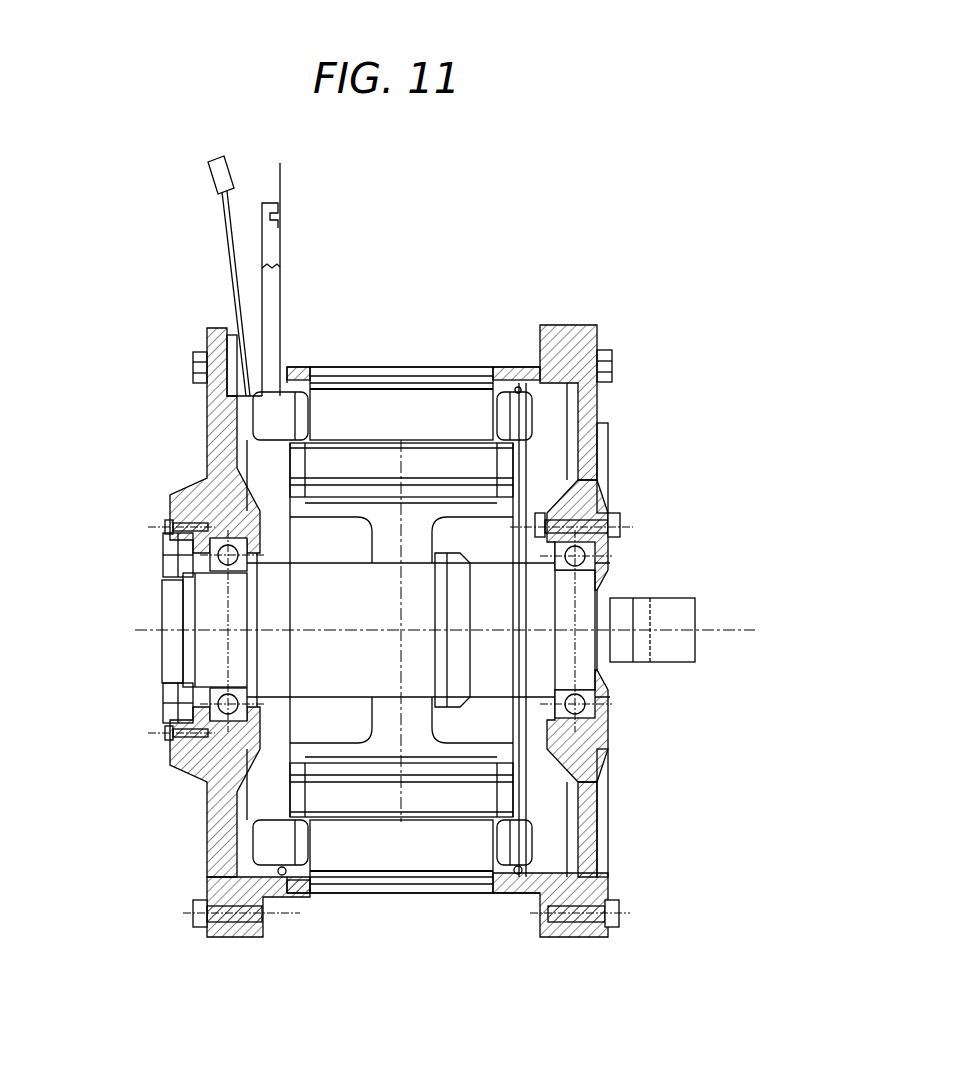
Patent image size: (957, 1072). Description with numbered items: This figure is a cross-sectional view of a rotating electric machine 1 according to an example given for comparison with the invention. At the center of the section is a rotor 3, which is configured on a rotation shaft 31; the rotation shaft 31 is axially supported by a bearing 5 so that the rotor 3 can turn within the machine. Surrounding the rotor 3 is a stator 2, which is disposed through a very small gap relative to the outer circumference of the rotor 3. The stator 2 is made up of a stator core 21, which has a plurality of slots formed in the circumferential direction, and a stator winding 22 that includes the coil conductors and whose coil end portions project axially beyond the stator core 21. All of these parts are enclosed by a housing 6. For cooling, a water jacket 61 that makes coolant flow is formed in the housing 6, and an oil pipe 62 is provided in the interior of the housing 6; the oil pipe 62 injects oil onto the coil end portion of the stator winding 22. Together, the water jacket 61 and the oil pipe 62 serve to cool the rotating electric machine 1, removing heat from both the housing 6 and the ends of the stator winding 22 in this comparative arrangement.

The rotating electric machine 1 is at (625, 312).
The stator 2 is at (471, 622).
The rotor 3 is at (460, 592).
The bearing 5 is at (215, 548).
The housing 6 is at (556, 325).
The stator core 21 is at (442, 402).
The stator winding 22 is at (287, 410).
The rotation shaft 31 is at (627, 663).
The water jacket 61 is at (415, 368).
The oil pipe 62 is at (282, 876).